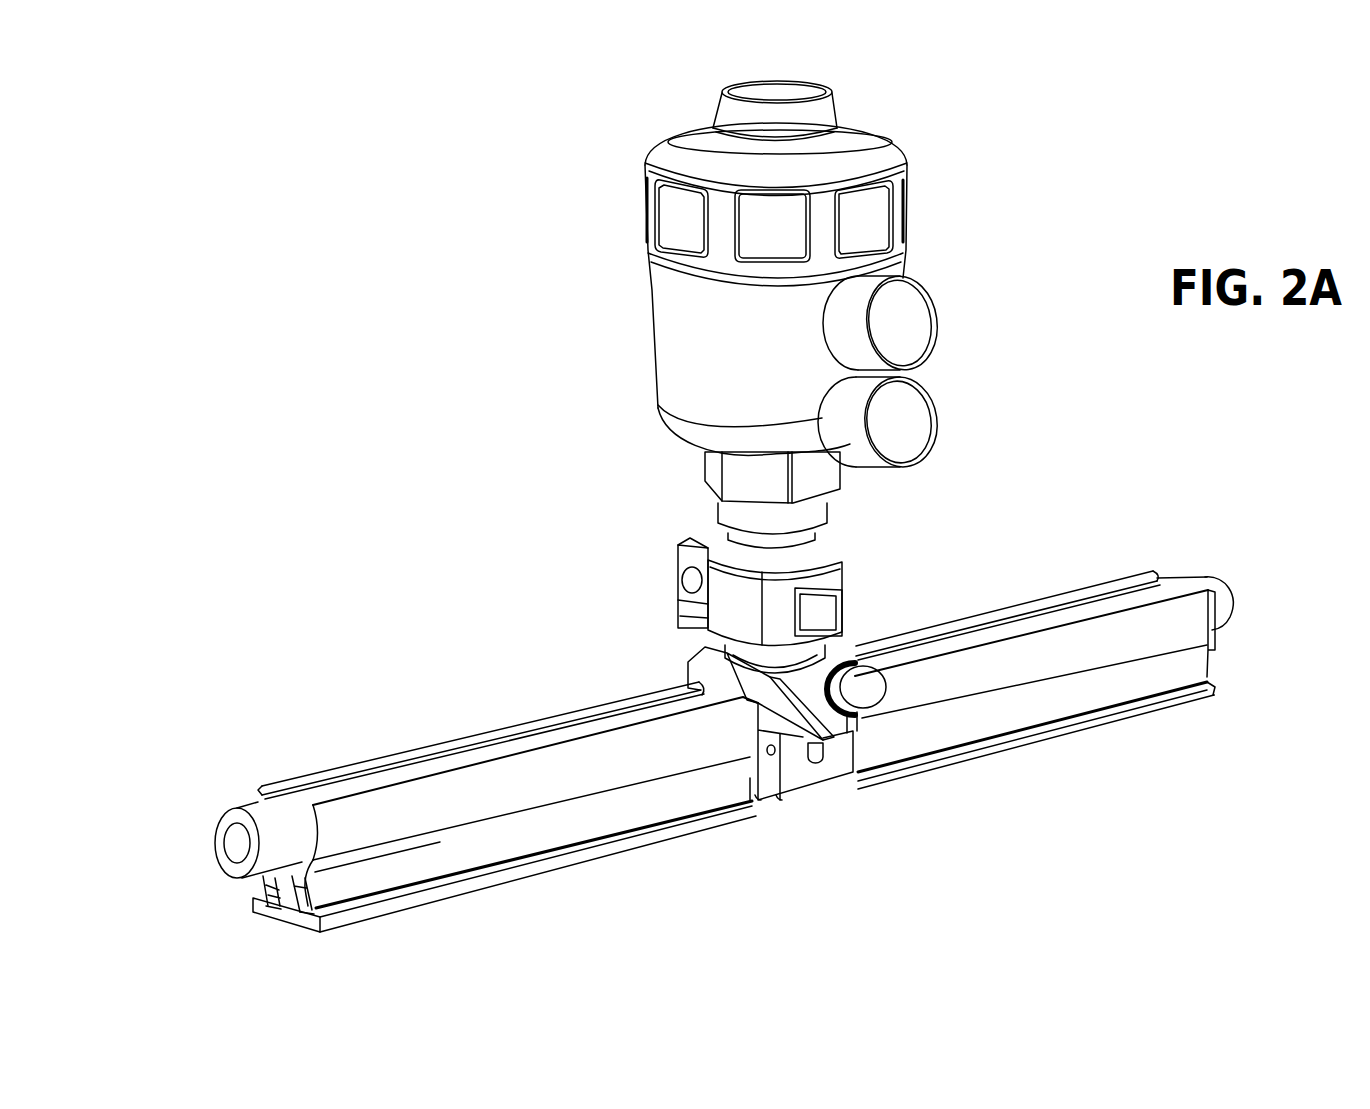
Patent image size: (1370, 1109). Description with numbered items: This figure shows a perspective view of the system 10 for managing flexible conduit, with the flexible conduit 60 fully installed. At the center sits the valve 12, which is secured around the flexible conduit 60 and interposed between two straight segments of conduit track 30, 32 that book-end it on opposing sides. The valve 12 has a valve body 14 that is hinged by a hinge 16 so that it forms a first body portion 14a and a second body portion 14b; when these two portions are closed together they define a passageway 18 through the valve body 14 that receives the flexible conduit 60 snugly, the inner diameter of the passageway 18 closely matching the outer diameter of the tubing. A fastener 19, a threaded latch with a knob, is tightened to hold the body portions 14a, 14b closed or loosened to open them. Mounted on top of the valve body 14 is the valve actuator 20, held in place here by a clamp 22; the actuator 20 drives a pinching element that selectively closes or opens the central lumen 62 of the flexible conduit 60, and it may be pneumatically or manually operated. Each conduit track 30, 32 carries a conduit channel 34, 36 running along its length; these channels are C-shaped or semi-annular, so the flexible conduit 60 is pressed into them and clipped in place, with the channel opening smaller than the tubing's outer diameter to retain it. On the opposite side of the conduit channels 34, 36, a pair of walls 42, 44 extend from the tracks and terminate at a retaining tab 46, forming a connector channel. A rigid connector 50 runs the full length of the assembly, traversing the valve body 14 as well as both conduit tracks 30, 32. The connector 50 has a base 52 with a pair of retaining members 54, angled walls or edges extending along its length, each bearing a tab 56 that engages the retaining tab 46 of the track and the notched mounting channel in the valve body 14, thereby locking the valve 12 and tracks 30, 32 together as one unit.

The system 10 is at (425, 505).
The valve 12 is at (525, 402).
The valve body 14 is at (850, 774).
The first body portion 14a is at (688, 660).
The second body portion 14b is at (815, 779).
The hinge 16 is at (773, 757).
The passageway 18 is at (710, 652).
The fastener 19 is at (858, 684).
The valve actuator 20 is at (912, 172).
The clamp 22 is at (843, 578).
The conduit track 30 is at (512, 698).
The conduit track 32 is at (1076, 561).
The conduit channel 34 is at (460, 748).
The conduit channel 36 is at (1141, 578).
The wall 42 is at (470, 845).
The wall 44 is at (1198, 657).
The retaining tab 46 is at (275, 898).
The connector 50 is at (1115, 739).
The base 52 is at (985, 752).
The retaining member 54 is at (273, 915).
The tab 56 is at (265, 884).
The flexible conduit 60 is at (1187, 582).
The central lumen 62 is at (235, 843).